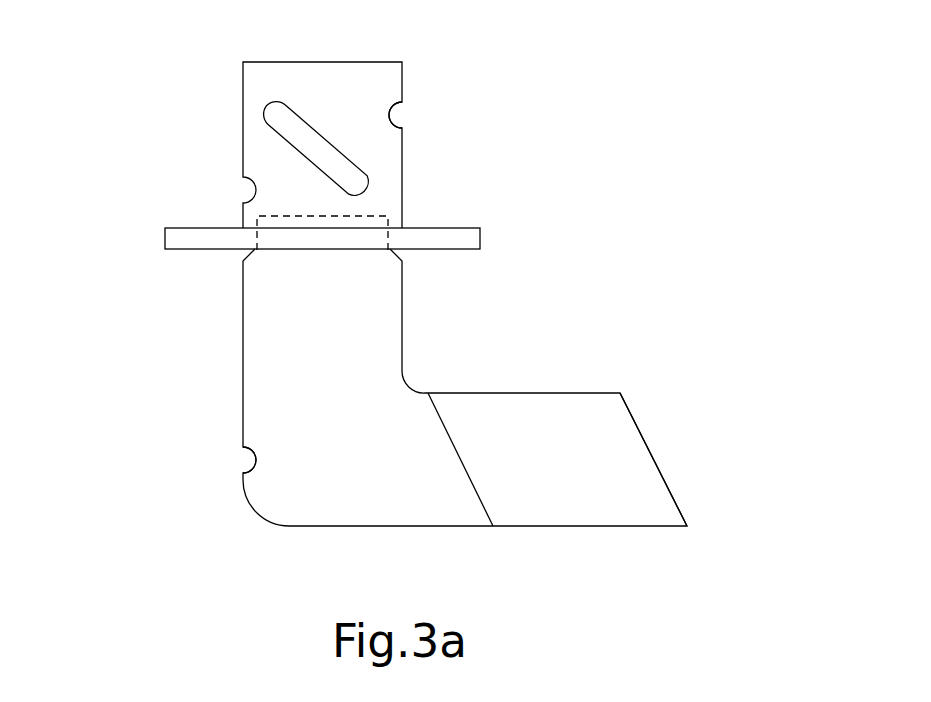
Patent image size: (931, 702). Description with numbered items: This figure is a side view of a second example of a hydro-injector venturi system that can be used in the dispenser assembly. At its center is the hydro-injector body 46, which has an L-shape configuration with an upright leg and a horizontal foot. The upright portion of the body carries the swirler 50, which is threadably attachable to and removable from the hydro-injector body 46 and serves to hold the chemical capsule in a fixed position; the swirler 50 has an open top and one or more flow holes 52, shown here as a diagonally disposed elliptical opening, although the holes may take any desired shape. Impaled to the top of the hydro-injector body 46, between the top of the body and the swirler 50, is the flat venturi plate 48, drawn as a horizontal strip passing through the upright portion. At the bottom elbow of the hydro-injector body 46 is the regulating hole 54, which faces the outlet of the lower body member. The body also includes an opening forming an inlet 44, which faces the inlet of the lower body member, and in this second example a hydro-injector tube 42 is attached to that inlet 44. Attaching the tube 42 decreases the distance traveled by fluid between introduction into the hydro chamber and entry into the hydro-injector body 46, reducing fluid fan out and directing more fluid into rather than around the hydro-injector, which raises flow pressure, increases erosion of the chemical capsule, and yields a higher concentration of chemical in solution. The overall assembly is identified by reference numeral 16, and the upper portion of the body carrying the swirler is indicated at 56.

The bracket 16 is at (423, 310).
The hydro-injector tube 42 is at (571, 464).
The inlet 44 is at (652, 452).
The hydro-injector body 46 is at (423, 433).
The venturi plate 48 is at (165, 238).
The swirler 50 is at (270, 158).
The flow holes 52 is at (400, 115).
The regulating hole 54 is at (245, 458).
The upper leg of bracket 56 is at (357, 127).